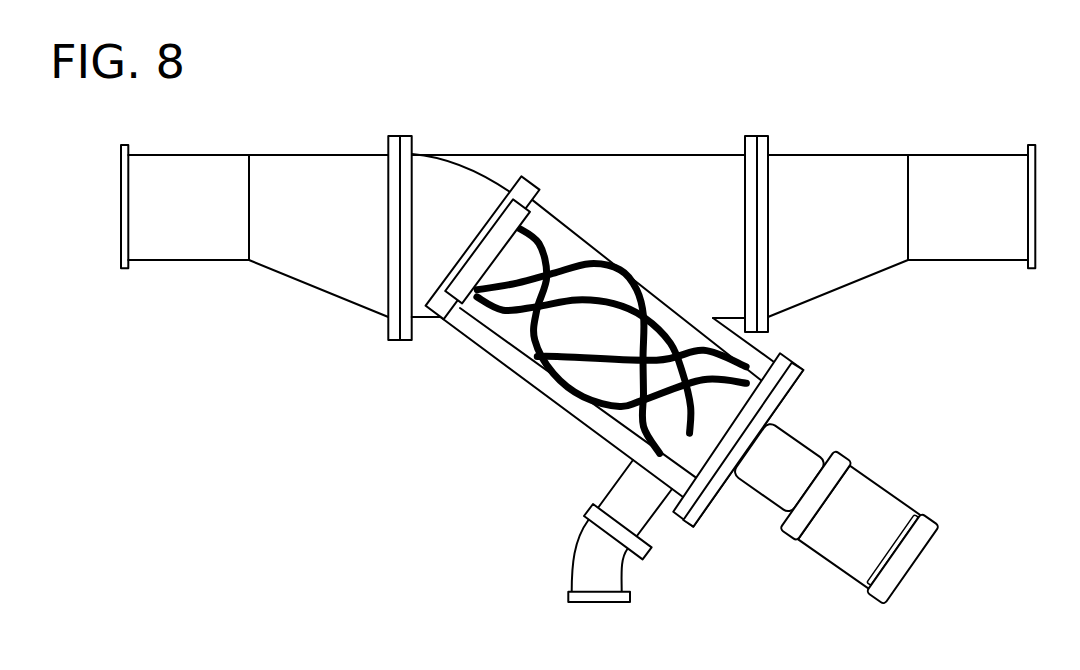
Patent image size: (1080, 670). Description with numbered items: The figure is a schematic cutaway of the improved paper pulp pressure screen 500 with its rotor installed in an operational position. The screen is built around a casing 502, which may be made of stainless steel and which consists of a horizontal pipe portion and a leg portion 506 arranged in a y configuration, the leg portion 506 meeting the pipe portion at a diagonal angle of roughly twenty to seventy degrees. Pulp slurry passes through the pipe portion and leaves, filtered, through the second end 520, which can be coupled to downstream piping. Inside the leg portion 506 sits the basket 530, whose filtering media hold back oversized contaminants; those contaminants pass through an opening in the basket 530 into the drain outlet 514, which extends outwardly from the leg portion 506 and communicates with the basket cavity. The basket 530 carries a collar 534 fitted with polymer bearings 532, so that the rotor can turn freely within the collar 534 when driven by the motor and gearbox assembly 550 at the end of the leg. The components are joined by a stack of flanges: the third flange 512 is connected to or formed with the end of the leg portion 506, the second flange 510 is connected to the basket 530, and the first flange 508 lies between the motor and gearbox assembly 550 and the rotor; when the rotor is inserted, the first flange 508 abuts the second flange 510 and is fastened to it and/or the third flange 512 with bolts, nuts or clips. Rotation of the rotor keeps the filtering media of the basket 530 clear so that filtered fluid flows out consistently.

The improved paper pulp pressure screen 500 is at (280, 534).
The casing 502 is at (442, 187).
The second end 520 is at (686, 182).
The leg portion 506 is at (577, 418).
The basket 530 is at (548, 343).
The bearings 532 is at (459, 310).
The collar 534 is at (447, 318).
The drain outlet 514 is at (650, 526).
The third flange 512 is at (784, 351).
The second flange 510 is at (793, 357).
The first flange 508 is at (802, 372).
The motor and gearbox assembly 550 is at (812, 367).